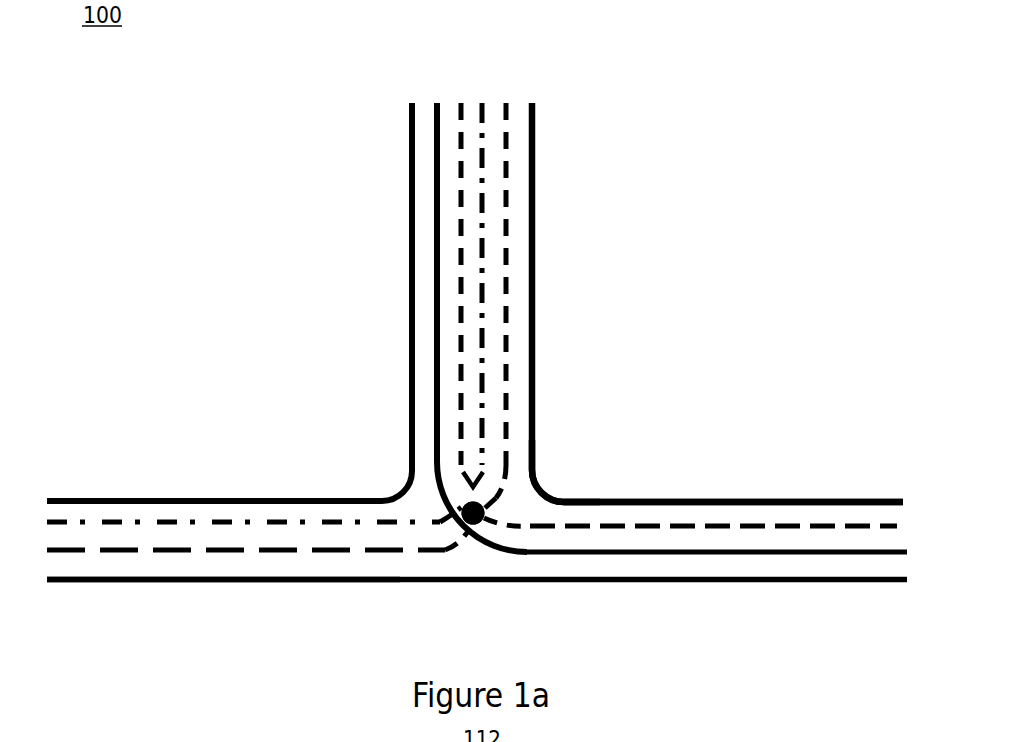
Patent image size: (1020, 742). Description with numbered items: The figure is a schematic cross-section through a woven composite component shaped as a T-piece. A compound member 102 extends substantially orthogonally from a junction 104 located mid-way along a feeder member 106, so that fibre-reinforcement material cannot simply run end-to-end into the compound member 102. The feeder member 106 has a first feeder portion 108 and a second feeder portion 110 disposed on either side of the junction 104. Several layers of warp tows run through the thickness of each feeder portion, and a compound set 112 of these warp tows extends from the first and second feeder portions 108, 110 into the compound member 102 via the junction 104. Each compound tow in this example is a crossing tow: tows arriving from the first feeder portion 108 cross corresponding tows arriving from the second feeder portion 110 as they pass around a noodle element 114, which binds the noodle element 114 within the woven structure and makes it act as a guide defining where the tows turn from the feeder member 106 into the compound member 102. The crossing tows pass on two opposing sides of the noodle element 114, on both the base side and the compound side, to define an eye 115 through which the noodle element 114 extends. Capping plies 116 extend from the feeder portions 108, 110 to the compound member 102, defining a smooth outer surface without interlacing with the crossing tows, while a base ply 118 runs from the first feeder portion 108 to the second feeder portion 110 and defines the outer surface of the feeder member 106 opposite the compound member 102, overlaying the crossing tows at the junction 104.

The compound member 102 is at (540, 207).
The junction 104 is at (545, 478).
The feeder member 106 is at (305, 563).
The first feeder portion 108 is at (148, 486).
The second feeder portion 110 is at (667, 493).
The compound set of warp tows 112 is at (522, 102).
The noodle element 114 is at (478, 520).
The eye 115 is at (466, 507).
The capping plies 116 is at (224, 498).
The base ply 118 is at (151, 584).